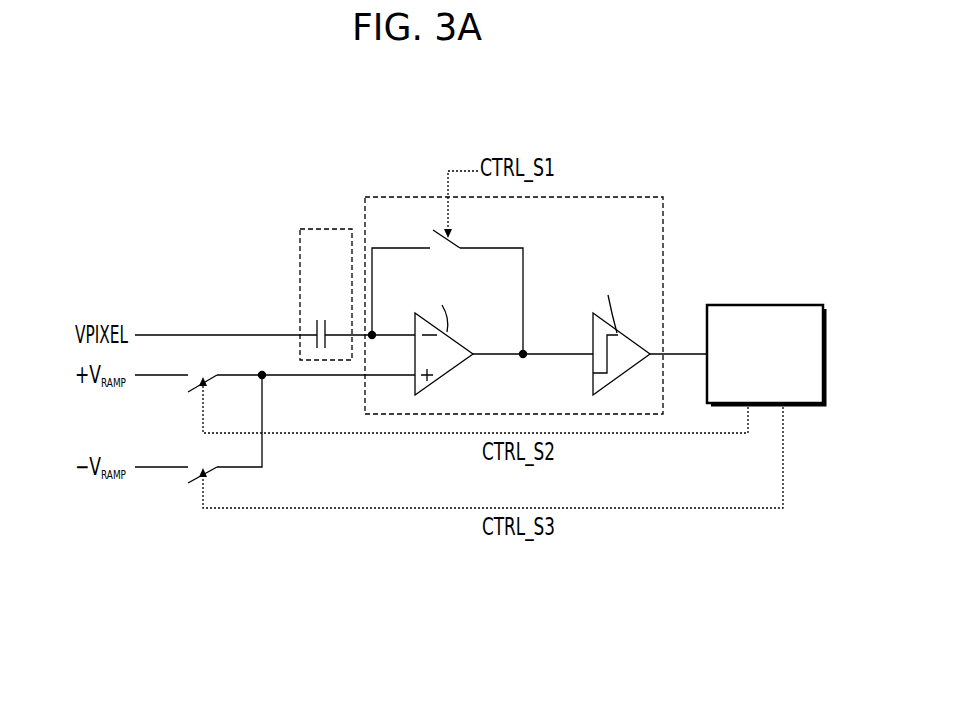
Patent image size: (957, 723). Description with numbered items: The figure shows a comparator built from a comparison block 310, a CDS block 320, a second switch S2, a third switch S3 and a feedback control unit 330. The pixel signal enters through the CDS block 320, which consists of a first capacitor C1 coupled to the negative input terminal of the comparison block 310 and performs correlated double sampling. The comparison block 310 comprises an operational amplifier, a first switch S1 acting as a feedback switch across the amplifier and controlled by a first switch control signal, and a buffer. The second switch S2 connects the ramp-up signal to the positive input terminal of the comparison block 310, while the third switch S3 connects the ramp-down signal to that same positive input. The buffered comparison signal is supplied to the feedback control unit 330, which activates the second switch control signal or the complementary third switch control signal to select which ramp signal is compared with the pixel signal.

The comparison block 310 is at (516, 292).
The CDS block 320 is at (311, 280).
The feedback control unit 330 is at (797, 303).
The first capacitor C1 is at (321, 316).
The first switch S1 is at (458, 231).
The second switch S2 is at (202, 368).
The third switch S3 is at (202, 463).